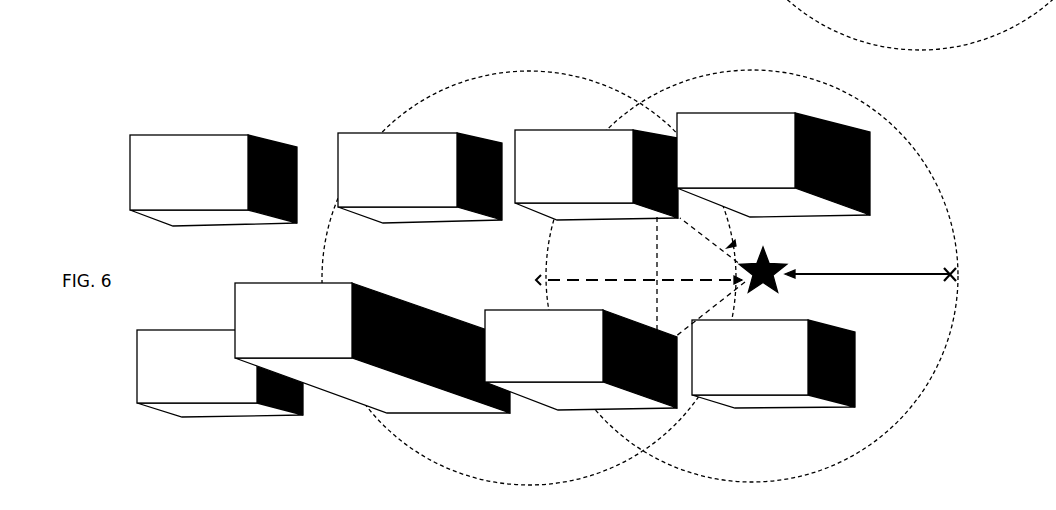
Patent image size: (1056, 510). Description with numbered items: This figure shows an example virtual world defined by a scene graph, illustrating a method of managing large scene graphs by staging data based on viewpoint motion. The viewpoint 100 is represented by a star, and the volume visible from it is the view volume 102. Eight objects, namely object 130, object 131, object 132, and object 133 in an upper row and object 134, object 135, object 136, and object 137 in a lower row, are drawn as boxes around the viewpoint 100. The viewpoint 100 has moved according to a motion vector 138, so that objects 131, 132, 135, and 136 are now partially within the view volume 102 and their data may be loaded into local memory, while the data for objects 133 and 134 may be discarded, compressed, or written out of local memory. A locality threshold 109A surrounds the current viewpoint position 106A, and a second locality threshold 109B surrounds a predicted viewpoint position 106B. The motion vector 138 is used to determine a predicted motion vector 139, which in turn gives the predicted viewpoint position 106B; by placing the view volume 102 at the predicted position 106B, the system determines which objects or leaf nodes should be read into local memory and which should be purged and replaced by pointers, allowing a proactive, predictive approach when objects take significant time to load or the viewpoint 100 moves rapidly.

The viewpoint 100 is at (777, 260).
The view volume 102 is at (730, 247).
The viewpoint position 106A is at (957, 270).
The predicted viewpoint position 106B is at (535, 280).
The locality threshold 109A is at (750, 70).
The locality threshold 109B is at (528, 72).
The object 130 is at (213, 180).
The object 131 is at (420, 178).
The object 132 is at (596, 175).
The object 133 is at (773, 165).
The object 134 is at (773, 364).
The object 135 is at (581, 360).
The object 136 is at (372, 348).
The object 137 is at (220, 373).
The motion vector 138 is at (866, 273).
The predicted motion vector 139 is at (637, 280).